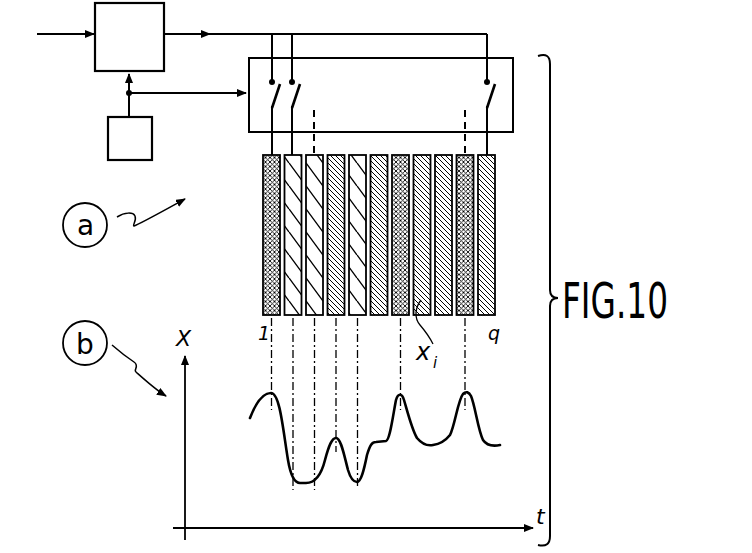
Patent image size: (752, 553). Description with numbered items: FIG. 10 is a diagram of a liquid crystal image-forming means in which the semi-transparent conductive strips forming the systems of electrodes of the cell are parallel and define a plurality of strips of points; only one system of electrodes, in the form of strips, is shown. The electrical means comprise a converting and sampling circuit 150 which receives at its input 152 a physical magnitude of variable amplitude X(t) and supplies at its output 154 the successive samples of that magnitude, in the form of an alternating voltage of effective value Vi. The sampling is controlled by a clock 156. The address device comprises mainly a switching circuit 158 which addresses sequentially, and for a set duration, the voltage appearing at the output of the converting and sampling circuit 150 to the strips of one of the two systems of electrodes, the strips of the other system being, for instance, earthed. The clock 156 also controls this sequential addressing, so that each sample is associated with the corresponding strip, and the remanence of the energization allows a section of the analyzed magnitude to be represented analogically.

The converting and sampling circuit 150 is at (142, 46).
The input 152 is at (55, 34).
The output 154 is at (192, 34).
The clock 156 is at (144, 151).
The switching circuit 158 is at (396, 108).